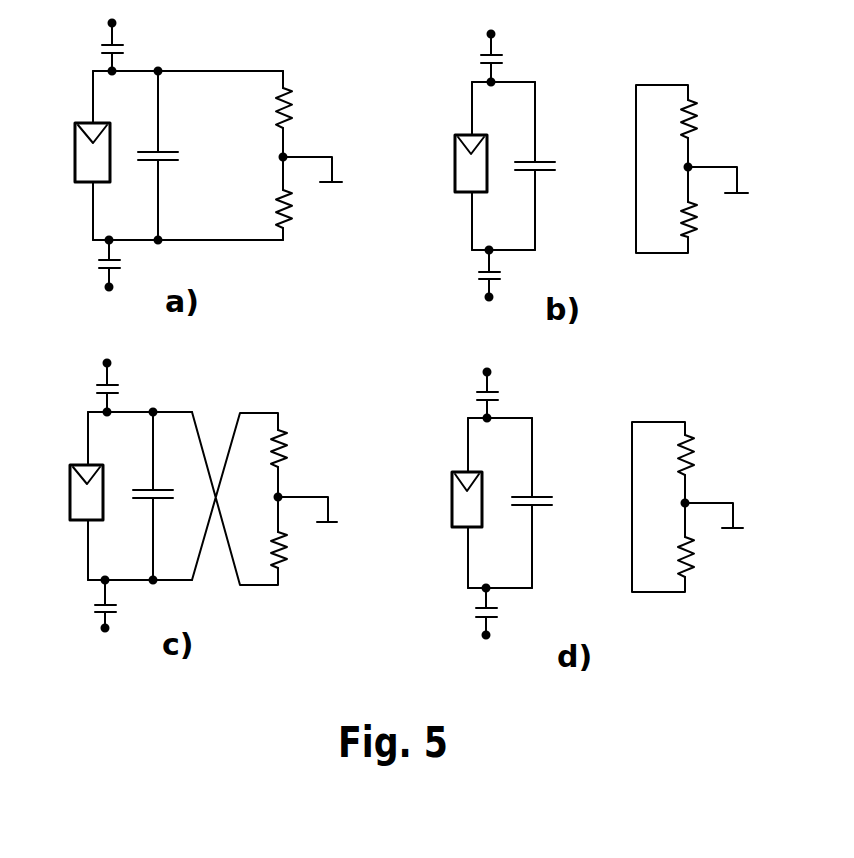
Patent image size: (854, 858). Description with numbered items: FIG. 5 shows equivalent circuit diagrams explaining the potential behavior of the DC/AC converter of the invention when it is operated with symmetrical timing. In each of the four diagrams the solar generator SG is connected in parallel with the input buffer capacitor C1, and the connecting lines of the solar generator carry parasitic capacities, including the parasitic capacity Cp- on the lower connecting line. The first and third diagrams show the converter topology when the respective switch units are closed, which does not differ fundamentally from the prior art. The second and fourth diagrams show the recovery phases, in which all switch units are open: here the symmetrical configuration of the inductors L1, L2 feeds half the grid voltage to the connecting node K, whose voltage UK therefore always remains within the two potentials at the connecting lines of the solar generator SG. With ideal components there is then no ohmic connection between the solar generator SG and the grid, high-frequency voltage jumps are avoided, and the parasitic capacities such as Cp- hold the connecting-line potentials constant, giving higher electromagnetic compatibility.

The parasitic capacity Cp- is at (319, 438).
The buffer capacitor C1 is at (363, 329).
The solar generator SG is at (261, 329).
The inductor L1 is at (470, 287).
The inductor L2 is at (470, 367).
The connecting node K is at (679, 339).
The tap voltage UK is at (645, 353).